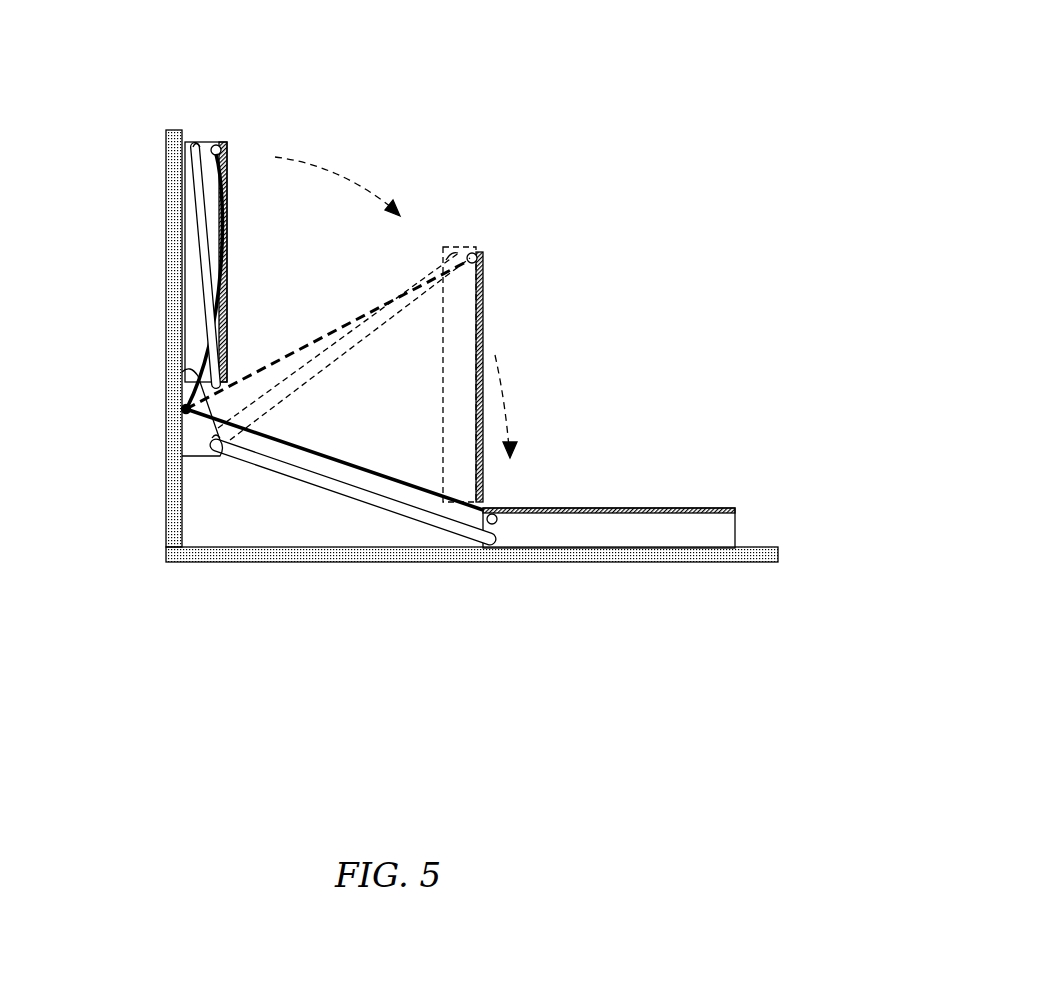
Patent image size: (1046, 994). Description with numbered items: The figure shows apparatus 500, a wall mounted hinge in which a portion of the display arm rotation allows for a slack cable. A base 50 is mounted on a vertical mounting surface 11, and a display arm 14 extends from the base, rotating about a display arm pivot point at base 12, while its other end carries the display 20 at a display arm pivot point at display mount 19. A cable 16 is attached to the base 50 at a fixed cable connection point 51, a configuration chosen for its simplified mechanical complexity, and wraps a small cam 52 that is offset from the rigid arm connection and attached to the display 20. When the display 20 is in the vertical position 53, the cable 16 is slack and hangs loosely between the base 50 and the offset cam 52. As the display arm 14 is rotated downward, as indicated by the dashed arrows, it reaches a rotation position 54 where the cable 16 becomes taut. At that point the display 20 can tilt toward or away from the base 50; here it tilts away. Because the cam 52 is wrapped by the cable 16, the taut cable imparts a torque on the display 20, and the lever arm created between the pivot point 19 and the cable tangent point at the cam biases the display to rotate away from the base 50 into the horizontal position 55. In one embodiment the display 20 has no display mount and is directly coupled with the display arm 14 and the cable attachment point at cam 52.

The apparatus 500 is at (467, 118).
The vertical mounting surface 11 is at (167, 484).
The display arm pivot point at base 12 is at (215, 442).
The display arm 14 is at (200, 292).
The cable 16 is at (196, 222).
The display arm pivot point at display mount 19 is at (186, 152).
The display 20 is at (207, 141).
The attached base with fixed cable connection 50 is at (182, 441).
The fixed cable connection point to base 51 is at (183, 409).
The small cam offset from rigid arm connection 52 is at (229, 148).
The display in vertical position 53 is at (265, 265).
The rotation position when cable becomes taut 54 is at (512, 293).
The horizontal position 55 is at (604, 421).